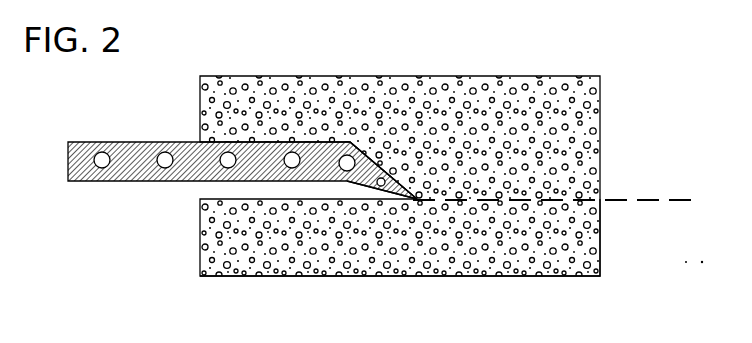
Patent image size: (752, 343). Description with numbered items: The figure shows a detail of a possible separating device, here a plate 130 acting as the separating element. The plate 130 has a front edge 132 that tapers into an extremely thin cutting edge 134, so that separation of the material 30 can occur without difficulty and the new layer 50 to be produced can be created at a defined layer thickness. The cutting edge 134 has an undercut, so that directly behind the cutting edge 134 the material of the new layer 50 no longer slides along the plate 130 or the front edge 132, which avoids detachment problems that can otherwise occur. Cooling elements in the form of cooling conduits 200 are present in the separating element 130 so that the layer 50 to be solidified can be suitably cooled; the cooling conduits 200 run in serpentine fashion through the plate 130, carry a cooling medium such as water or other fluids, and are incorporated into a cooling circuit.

The material 30 is at (557, 92).
The new layer 50 is at (577, 247).
The plate 130 is at (135, 181).
The front edge 132 is at (371, 163).
The cutting edge 134 is at (402, 190).
The cooling conduits 200 is at (165, 152).